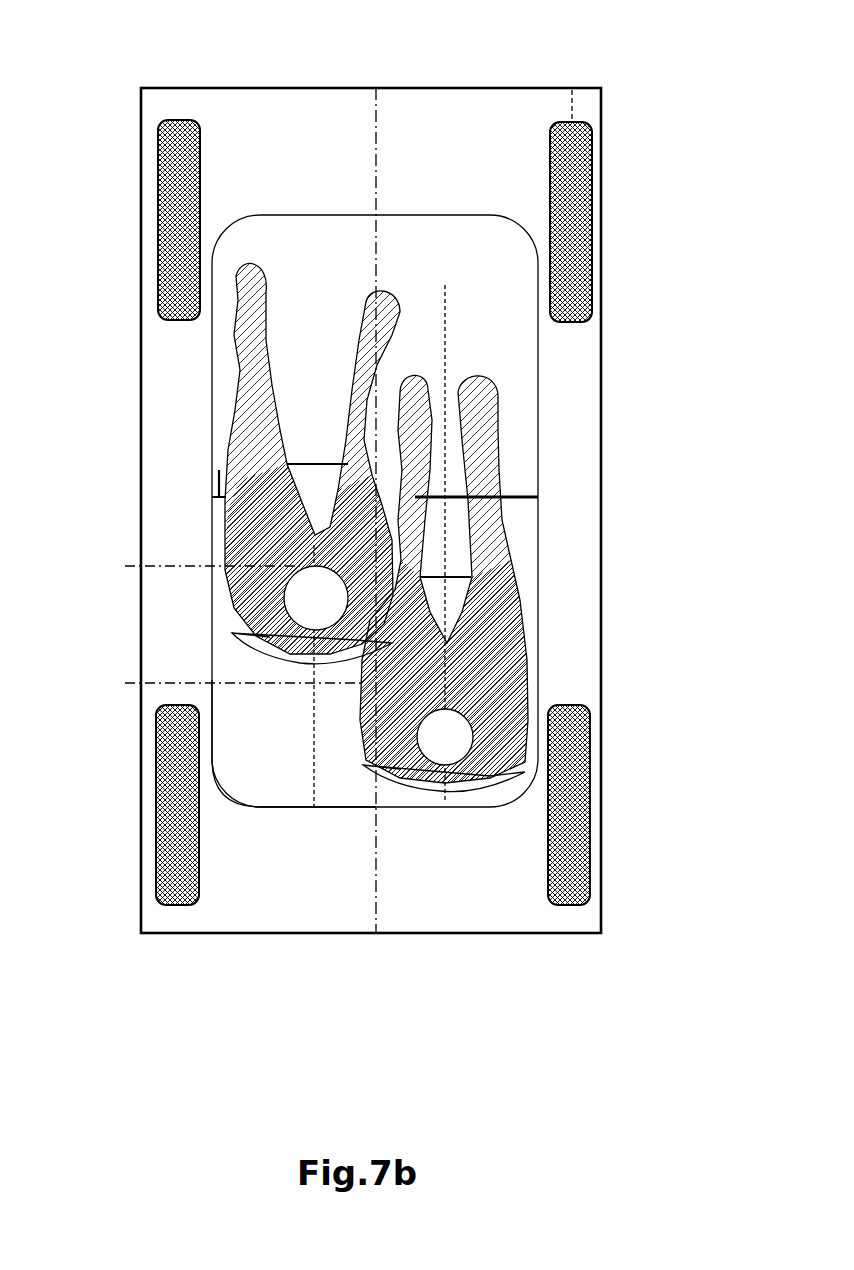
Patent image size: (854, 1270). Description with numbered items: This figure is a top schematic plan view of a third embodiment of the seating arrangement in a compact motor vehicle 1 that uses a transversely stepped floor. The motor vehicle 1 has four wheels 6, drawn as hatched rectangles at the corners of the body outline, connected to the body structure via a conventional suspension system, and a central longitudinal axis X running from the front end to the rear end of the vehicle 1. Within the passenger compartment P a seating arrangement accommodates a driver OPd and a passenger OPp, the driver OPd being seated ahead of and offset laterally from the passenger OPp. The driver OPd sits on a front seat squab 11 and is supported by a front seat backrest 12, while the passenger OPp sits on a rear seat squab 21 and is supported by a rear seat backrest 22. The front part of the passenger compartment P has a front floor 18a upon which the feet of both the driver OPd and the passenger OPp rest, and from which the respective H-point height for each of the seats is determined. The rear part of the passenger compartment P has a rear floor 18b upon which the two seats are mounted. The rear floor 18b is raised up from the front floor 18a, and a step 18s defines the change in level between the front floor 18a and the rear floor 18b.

The motor vehicle 1 is at (177, 52).
The wheels 6 is at (158, 184).
The front seat squab 11 is at (308, 463).
The front seat backrest 12 is at (236, 641).
The front floor 18a is at (375, 511).
The rear floor 18b is at (294, 743).
The step 18s is at (219, 472).
The rear seat squab 21 is at (452, 577).
The rear seat backrest 22 is at (463, 792).
The driver OPd is at (238, 600).
The passenger OPp is at (364, 724).
The passenger compartment P is at (311, 811).
The central longitudinal axis X is at (376, 88).